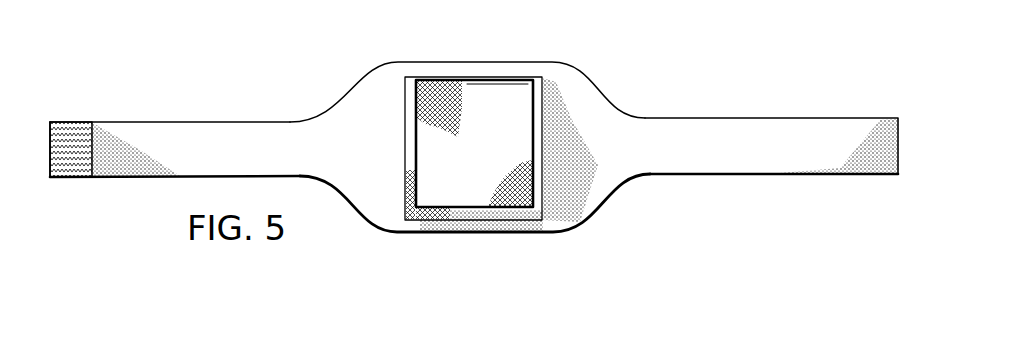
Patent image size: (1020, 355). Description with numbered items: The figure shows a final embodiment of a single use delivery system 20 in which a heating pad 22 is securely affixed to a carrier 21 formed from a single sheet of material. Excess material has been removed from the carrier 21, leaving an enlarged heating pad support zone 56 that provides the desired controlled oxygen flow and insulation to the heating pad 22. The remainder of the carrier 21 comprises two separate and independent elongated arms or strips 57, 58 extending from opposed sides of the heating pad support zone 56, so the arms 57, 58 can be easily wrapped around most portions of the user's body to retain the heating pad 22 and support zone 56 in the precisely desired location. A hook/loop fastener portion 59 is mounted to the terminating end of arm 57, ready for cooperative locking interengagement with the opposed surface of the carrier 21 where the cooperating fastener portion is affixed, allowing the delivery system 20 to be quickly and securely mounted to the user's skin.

The delivery system 20 is at (272, 93).
The carrier 21 is at (704, 133).
The heating pad 22 is at (500, 95).
The heating pad support zone 56 is at (391, 88).
The elongated arm 57 is at (157, 165).
The elongated arm 58 is at (735, 163).
The hook/loop fastener portion 59 is at (72, 132).